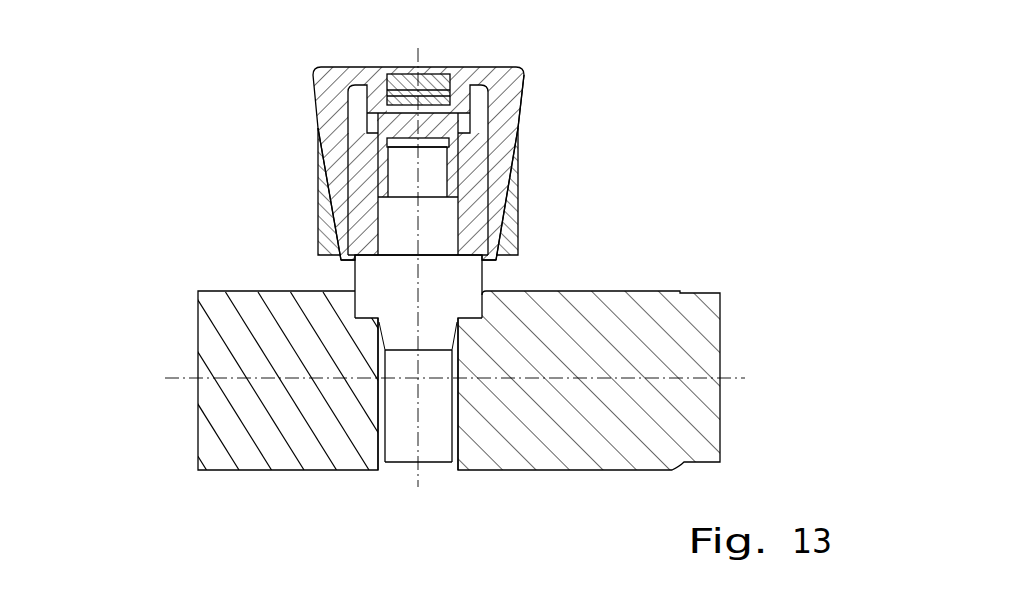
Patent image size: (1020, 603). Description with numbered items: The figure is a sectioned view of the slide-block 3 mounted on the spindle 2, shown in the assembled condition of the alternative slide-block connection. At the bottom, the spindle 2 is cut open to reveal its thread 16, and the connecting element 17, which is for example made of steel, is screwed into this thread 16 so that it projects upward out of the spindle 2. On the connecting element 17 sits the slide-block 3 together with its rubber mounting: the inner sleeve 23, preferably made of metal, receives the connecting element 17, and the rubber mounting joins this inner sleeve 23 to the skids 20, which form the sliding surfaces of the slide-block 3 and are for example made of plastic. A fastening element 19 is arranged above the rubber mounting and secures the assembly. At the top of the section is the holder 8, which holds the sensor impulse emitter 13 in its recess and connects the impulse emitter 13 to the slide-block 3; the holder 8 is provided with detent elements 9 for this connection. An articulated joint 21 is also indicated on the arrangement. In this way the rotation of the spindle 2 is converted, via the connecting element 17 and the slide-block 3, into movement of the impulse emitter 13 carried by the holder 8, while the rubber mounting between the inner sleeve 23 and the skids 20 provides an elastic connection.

The spindle 2 is at (199, 348).
The slide-block 3 is at (311, 235).
The holder 8 is at (313, 90).
The detent elements 9 is at (505, 258).
The sensor impulse emitter 13 is at (348, 68).
The thread 16 is at (392, 360).
The connecting element 17 is at (397, 413).
The fastening element 19 is at (325, 124).
The skids 20 is at (520, 207).
The articulated joint 21 is at (528, 155).
The inner sleeve 23 is at (322, 176).